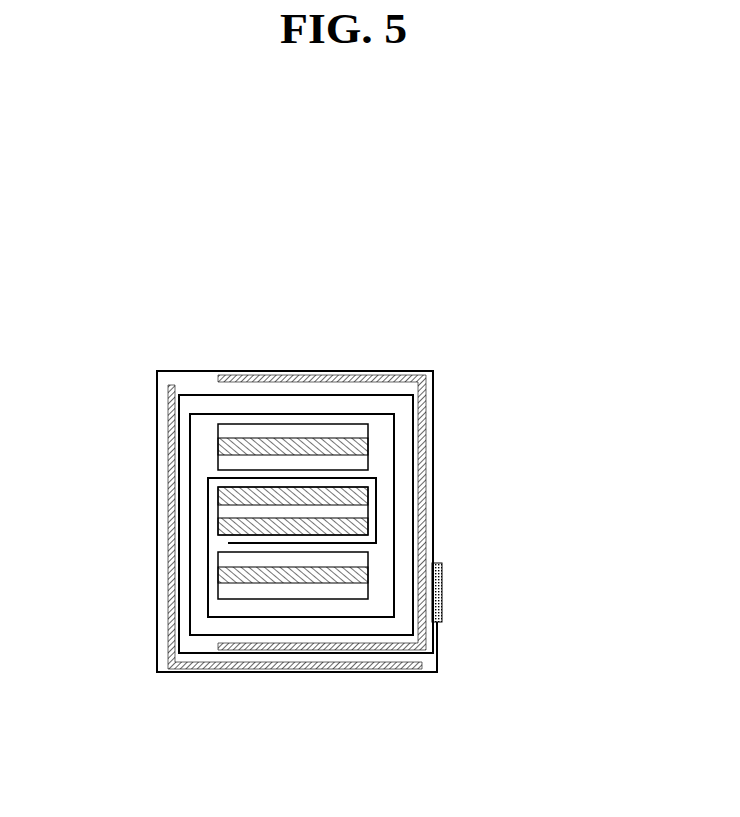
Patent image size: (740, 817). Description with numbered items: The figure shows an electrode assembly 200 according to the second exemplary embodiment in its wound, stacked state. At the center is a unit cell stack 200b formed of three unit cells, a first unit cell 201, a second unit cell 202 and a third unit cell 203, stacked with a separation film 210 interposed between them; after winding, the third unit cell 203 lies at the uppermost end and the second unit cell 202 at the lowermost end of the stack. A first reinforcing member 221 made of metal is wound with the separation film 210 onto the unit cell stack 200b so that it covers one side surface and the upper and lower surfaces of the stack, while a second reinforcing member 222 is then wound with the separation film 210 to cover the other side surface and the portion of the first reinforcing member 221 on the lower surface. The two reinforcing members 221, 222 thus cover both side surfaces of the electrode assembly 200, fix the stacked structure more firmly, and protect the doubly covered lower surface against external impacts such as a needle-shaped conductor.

The electrode assembly 200 is at (137, 287).
The separation film 210 is at (157, 662).
The first reinforcing member 221 is at (294, 377).
The second reinforcing member 222 is at (167, 571).
The unit cell stack 200b is at (570, 450).
The first unit cell 201 is at (353, 512).
The second unit cell 202 is at (363, 577).
The third unit cell 203 is at (363, 445).